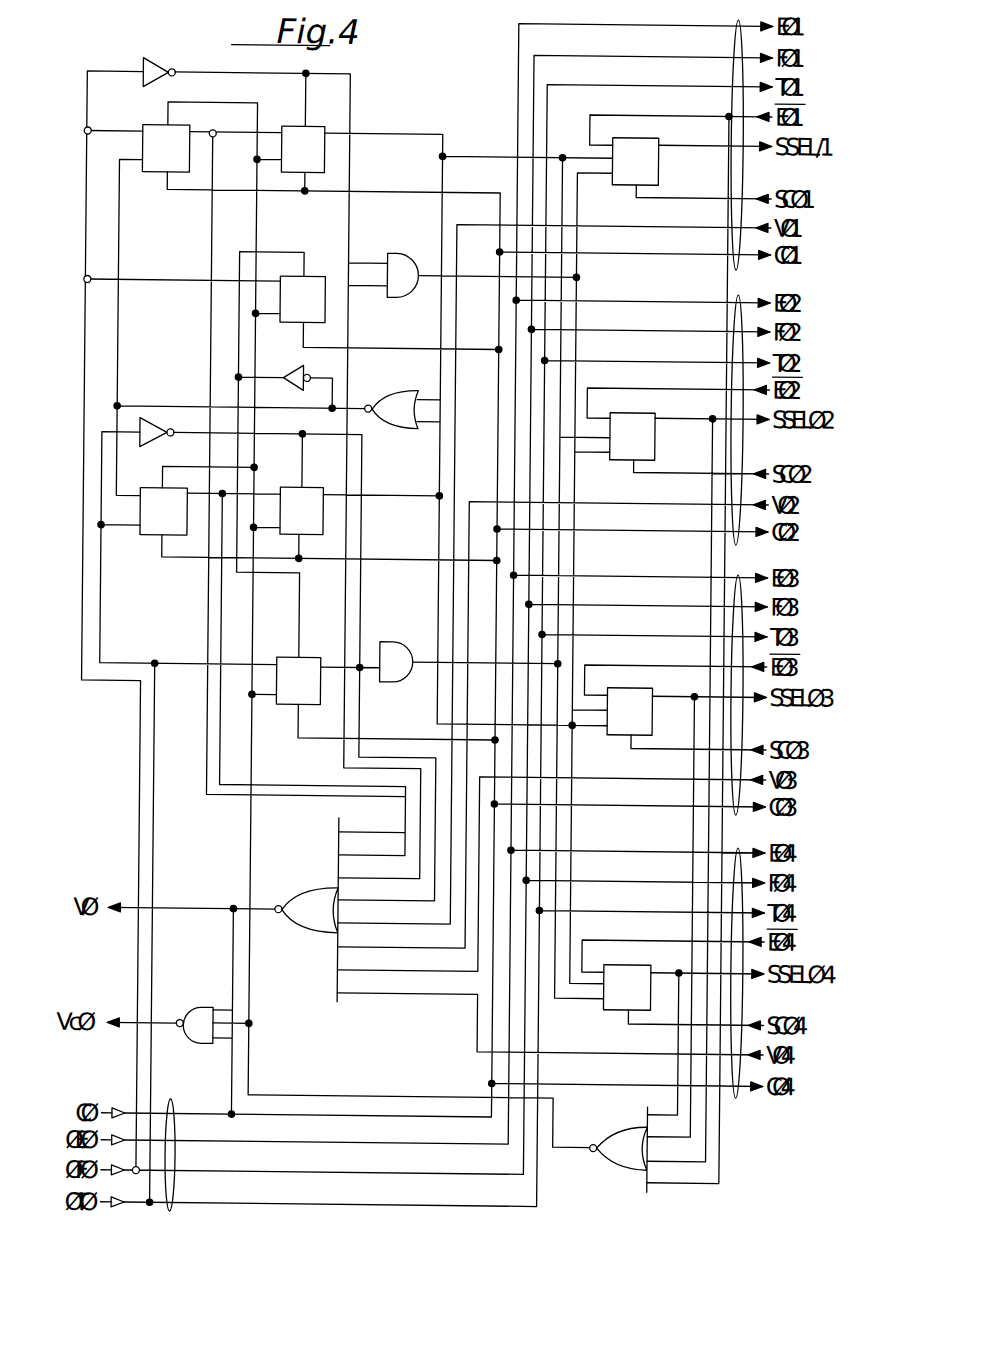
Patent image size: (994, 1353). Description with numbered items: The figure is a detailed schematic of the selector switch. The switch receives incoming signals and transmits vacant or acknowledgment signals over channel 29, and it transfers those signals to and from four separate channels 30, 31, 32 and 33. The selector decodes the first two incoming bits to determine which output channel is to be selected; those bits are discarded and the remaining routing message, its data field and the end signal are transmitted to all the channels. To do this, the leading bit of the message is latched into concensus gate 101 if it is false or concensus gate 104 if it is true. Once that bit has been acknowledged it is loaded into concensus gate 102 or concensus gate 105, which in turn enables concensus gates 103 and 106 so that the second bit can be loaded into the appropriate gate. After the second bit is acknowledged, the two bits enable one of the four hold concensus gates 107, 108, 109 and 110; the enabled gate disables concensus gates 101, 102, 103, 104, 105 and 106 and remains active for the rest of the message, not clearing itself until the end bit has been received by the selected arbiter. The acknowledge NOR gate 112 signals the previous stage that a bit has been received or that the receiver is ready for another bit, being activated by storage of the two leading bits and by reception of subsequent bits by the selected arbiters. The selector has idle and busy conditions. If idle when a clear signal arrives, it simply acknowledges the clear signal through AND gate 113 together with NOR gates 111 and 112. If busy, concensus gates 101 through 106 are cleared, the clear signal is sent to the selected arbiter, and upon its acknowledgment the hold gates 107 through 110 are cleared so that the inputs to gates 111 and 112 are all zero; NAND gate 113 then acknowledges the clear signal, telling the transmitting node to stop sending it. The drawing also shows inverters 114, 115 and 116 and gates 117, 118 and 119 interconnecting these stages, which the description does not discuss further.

The channel 29 is at (125, 900).
The channel 30 is at (738, 162).
The channel 31 is at (738, 432).
The channel 32 is at (733, 709).
The channel 33 is at (731, 988).
The concensus gate 101 is at (146, 126).
The concensus gate 102 is at (287, 125).
The concensus gate 103 is at (321, 275).
The concensus gate 104 is at (153, 536).
The concensus gate 105 is at (316, 487).
The concensus gate 106 is at (291, 666).
The concensus gate 107 is at (619, 182).
The concensus gate 108 is at (614, 455).
The concensus gate 109 is at (618, 731).
The concensus gate 110 is at (614, 1006).
The NOR gate 111 is at (606, 1157).
The acknowledge NOR gate 112 is at (306, 892).
The NAND gate 113 is at (199, 1005).
The inverter 114 is at (163, 78).
The inverter 115 is at (163, 440).
The inverter 116 is at (296, 368).
The AND gate 117 is at (398, 252).
The NOR gate 118 is at (398, 390).
The AND gate 119 is at (394, 640).